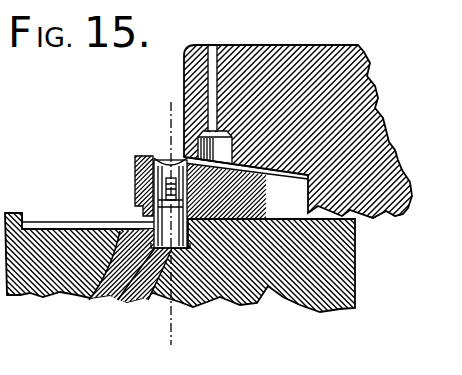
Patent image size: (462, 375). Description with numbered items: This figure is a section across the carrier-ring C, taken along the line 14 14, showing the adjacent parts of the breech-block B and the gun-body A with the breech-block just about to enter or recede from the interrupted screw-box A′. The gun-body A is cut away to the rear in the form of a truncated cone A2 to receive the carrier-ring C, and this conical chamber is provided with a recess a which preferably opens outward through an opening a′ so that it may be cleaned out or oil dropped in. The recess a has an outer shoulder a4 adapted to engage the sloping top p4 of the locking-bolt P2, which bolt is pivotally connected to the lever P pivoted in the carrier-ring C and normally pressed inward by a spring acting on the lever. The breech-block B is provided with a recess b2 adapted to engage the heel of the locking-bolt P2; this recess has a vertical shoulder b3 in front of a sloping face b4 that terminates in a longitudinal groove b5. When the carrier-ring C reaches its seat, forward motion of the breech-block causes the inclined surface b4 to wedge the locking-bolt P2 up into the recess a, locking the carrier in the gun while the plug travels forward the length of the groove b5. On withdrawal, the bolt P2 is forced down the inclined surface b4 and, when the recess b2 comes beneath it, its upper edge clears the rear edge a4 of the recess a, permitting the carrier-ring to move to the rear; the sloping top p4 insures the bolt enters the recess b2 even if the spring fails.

The gun-body A is at (291, 62).
The interrupted screw-box A′ is at (375, 218).
The truncated cone chamber A2 is at (303, 140).
The opening a′ is at (212, 62).
The recess a is at (198, 148).
The outer shoulder a4 is at (185, 161).
The breech-block B is at (268, 284).
The longitudinal groove b5 is at (47, 228).
The sloping face b4 is at (90, 299).
The vertical shoulder b3 is at (121, 298).
The recess b2 is at (148, 298).
The carrier-ring C is at (268, 197).
The lever P is at (152, 171).
The locking-bolt P2 is at (165, 227).
The sloping top p4 is at (172, 162).
The section line 14 is at (172, 225).